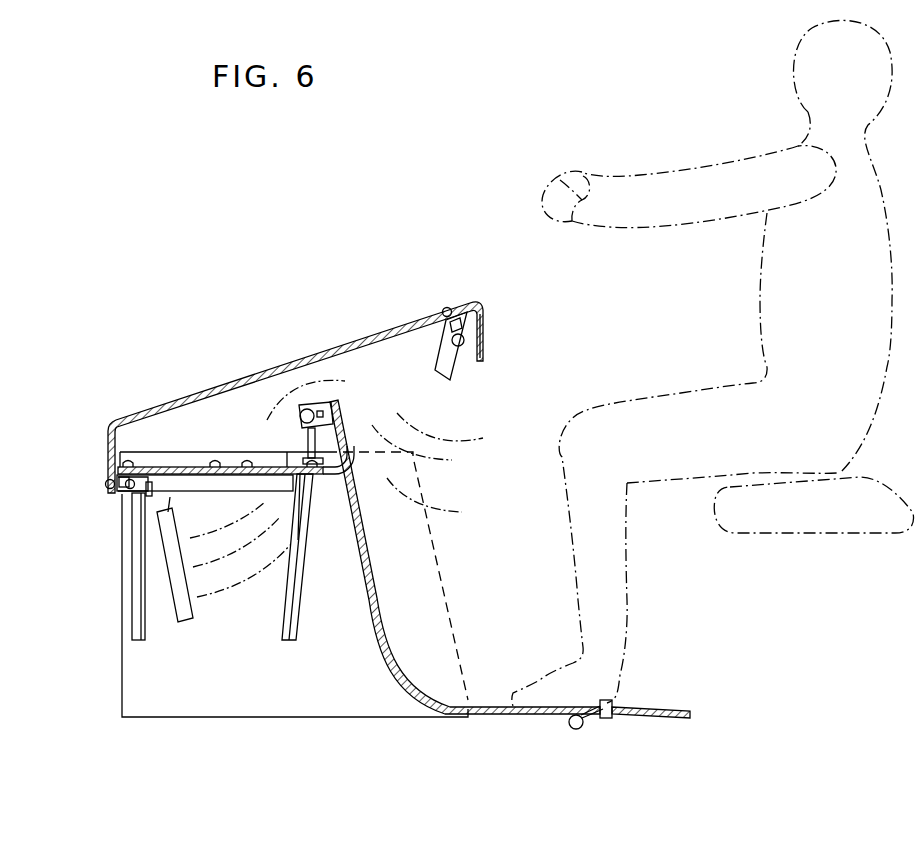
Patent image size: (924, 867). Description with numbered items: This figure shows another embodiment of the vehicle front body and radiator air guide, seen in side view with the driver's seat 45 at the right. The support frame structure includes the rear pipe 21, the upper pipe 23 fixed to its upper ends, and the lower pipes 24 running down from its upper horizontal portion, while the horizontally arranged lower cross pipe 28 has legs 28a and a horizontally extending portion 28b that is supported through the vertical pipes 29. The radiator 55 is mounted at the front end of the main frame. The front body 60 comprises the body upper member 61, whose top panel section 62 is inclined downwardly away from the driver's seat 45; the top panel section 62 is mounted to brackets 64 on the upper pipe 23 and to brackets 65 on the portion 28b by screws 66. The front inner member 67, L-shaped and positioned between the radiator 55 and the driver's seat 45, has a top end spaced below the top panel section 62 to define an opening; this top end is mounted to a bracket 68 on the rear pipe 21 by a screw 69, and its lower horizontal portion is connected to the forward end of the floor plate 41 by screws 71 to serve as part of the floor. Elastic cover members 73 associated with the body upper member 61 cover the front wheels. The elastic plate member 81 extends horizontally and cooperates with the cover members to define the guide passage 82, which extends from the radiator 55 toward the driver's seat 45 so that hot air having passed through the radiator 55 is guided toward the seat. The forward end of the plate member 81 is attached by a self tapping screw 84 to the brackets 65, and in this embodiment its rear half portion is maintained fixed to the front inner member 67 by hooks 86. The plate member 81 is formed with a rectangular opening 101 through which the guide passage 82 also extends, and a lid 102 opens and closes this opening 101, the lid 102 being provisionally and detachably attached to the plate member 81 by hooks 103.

The rear pipe 21 is at (298, 412).
The upper pipe 23 is at (458, 362).
The lower pipes 24 is at (300, 616).
The lower cross pipe 28 is at (178, 557).
The legs of the lower cross pipe 28a is at (195, 492).
The horizontally extending portion of the lower cross pipe 28b is at (147, 498).
The vertical pipes 29 is at (140, 638).
The floor plate 41 is at (657, 715).
The driver's seat 45 is at (812, 534).
The radiator 55 is at (181, 607).
The front body 60 is at (292, 360).
The body upper member 61 is at (353, 334).
The top panel section 62 is at (397, 326).
The brackets 64 is at (470, 323).
The brackets 65 is at (119, 497).
The screws 66 is at (447, 307).
The front inner member 67 is at (377, 662).
The bracket 68 is at (340, 432).
The screw 69 is at (338, 415).
The screws 71 is at (602, 703).
The cover members 73 is at (183, 718).
The plate member 81 is at (166, 465).
The guide passage 82 is at (247, 622).
The self tapping screw 84 is at (125, 462).
The hooks 86 is at (333, 478).
The rectangular opening 101 is at (298, 537).
The lid 102 is at (273, 466).
The hooks 103 is at (247, 463).